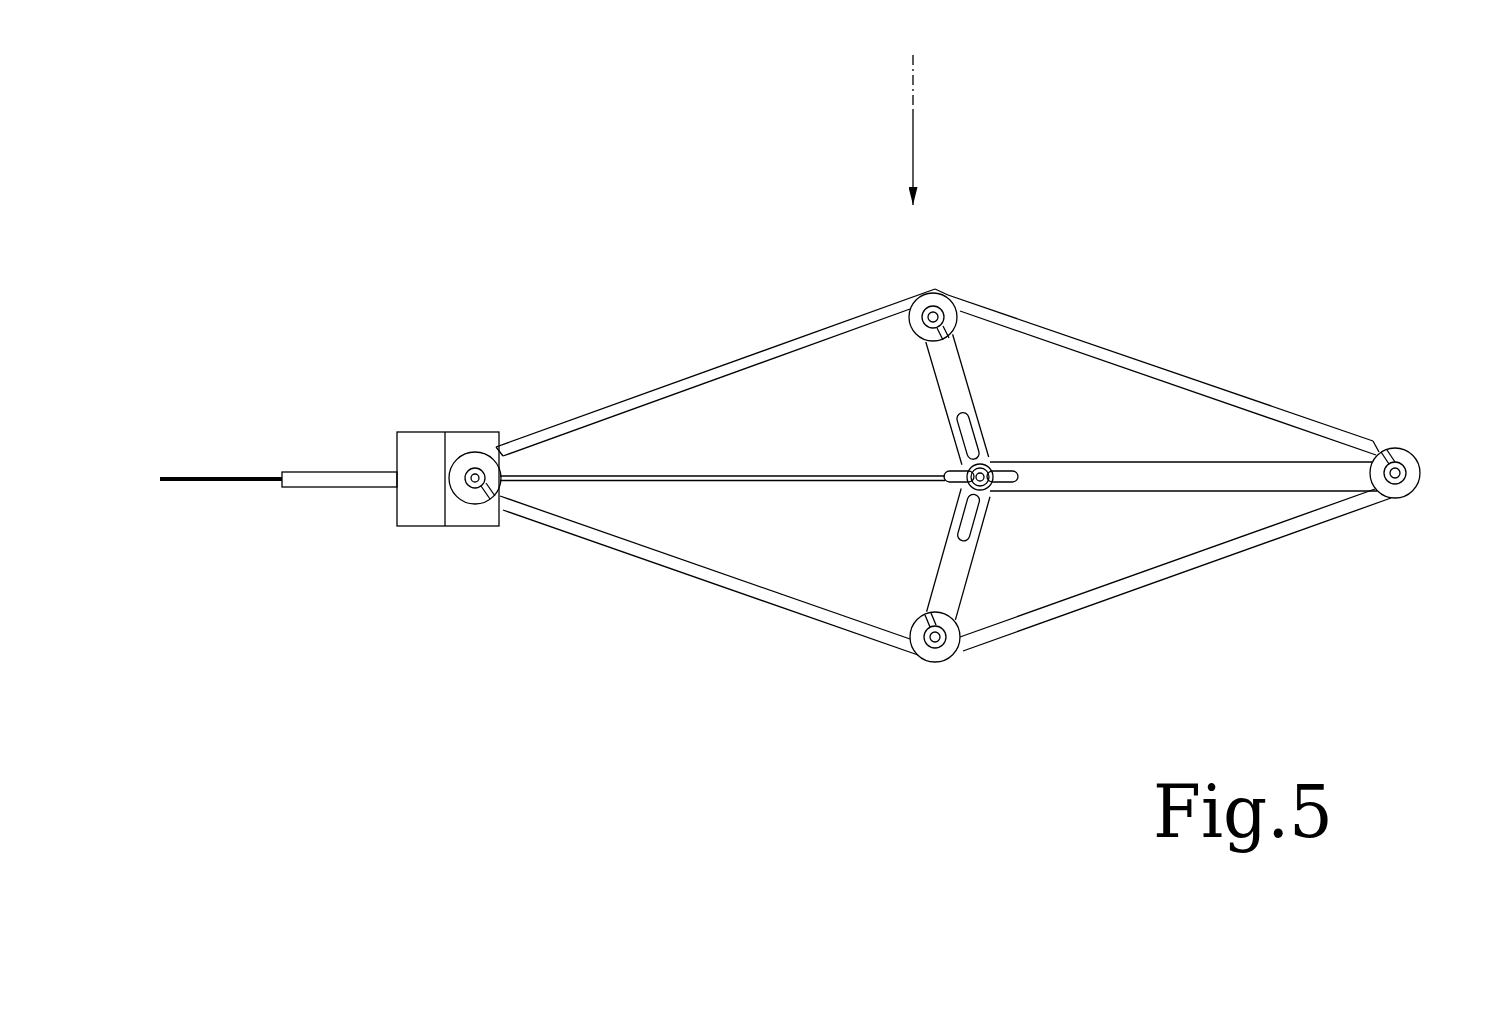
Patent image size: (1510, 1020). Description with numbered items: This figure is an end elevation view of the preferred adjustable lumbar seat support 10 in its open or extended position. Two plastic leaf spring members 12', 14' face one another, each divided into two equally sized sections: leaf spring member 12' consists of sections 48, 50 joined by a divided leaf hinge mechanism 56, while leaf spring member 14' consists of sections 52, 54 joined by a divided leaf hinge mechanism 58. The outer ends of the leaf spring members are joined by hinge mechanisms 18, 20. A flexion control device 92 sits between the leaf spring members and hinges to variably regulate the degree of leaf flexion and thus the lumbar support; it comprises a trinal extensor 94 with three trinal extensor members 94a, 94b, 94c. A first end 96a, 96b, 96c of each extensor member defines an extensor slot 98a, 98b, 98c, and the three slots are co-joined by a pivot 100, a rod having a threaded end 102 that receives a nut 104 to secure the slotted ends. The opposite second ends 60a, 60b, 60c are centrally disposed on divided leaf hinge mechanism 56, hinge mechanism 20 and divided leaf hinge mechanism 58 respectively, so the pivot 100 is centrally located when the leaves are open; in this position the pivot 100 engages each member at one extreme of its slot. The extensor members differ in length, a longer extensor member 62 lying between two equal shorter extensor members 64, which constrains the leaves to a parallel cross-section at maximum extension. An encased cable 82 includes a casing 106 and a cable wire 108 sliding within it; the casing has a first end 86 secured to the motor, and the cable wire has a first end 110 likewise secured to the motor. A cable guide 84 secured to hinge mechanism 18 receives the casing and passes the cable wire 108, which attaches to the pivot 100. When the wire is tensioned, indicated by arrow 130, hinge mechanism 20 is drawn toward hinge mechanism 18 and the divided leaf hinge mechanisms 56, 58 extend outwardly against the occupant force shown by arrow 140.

The adjustable lumbar seat support 10 is at (780, 270).
The leaf spring member 12' is at (1223, 317).
The leaf spring member 14' is at (709, 589).
The hinge mechanism 18 is at (466, 486).
The hinge mechanism 20 is at (1398, 465).
The section 48 is at (1313, 418).
The section 50 is at (565, 410).
The section 52 is at (1180, 577).
The section 54 is at (565, 532).
The divided leaf hinge mechanism 56 is at (928, 296).
The divided leaf hinge mechanism 58 is at (925, 650).
The second end of trinal extensor member 60a is at (966, 336).
The second end of trinal extensor member 60b is at (1355, 453).
The second end of trinal extensor member 60c is at (963, 632).
The longer extensor member 62 is at (1158, 491).
The shorter extensor members 64 is at (926, 344).
The encased cable 82 is at (285, 495).
The cable guide 84 is at (470, 431).
The first end of casing 86 is at (378, 447).
The flexion control device 92 is at (800, 516).
The trinal extensor 94 is at (1108, 443).
The trinal extensor member 94a is at (945, 375).
The trinal extensor member 94b is at (1158, 440).
The trinal extensor member 94c is at (937, 576).
The first end of trinal extensor member 96a is at (928, 435).
The first end of trinal extensor member 96b is at (1007, 498).
The first end of trinal extensor member 96c is at (957, 493).
The extensor slot 98a is at (957, 422).
The extensor slot 98b is at (1003, 470).
The extensor slot 98c is at (962, 545).
The pivot 100 is at (966, 470).
The threaded end 102 is at (1000, 518).
The nut 104 is at (992, 450).
The casing 106 is at (300, 488).
The cable wire 108 is at (186, 481).
The first end of cable wire 110 is at (942, 480).
The arrow 130 is at (590, 458).
The arrow 140 is at (913, 112).